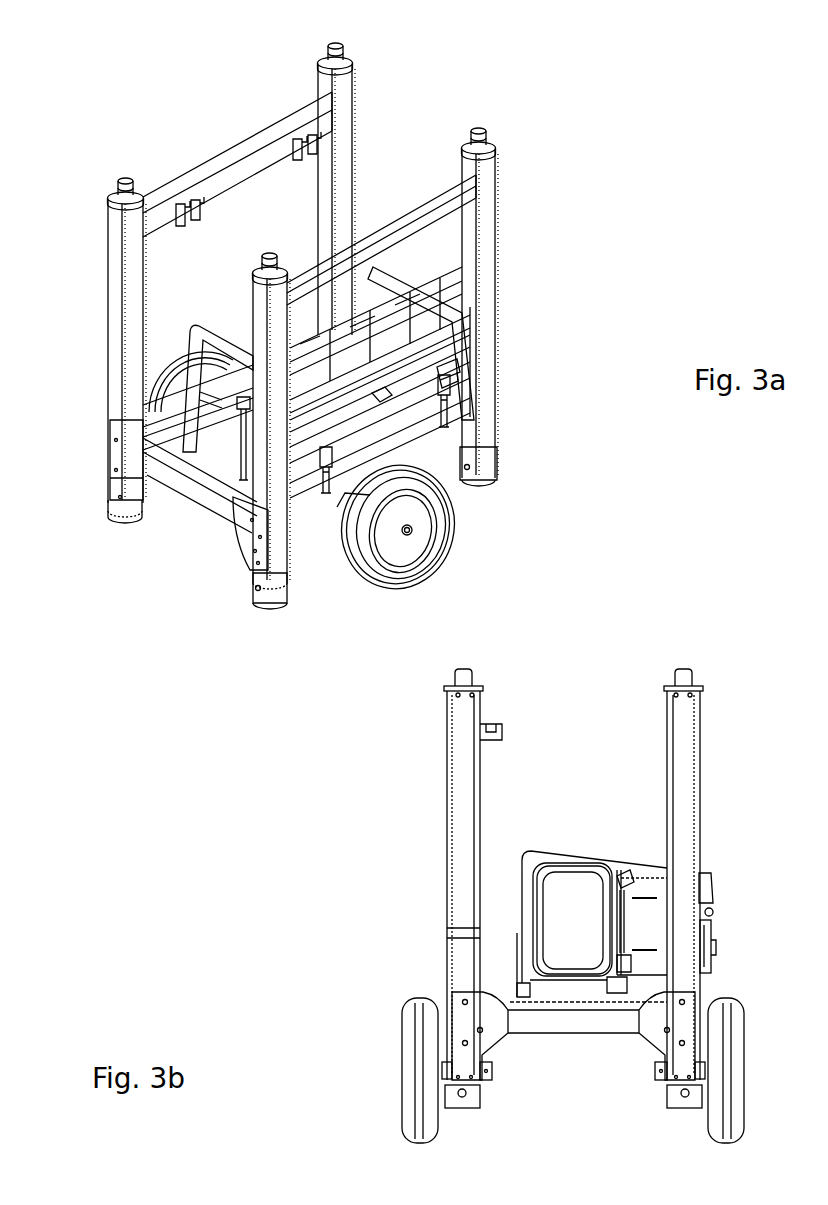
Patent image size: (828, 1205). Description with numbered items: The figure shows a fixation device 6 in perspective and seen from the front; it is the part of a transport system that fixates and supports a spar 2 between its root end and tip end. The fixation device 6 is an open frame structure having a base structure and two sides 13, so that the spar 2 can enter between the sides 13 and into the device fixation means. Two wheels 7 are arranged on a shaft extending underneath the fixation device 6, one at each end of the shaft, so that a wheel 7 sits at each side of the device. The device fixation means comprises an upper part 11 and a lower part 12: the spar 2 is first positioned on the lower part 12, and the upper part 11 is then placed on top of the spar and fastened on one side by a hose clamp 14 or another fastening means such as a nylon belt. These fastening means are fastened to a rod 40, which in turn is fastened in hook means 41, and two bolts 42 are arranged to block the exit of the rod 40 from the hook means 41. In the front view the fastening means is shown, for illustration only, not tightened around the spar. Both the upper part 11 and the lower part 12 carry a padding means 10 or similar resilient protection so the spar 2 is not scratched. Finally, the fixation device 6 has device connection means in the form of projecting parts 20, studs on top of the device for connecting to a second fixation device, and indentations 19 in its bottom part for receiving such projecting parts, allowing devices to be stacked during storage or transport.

In FIG. 3B, the spar 2 is at (572, 910).
In FIG. 3A, the fixation device 6 is at (190, 114).
In FIG. 3A, the wheels 7 is at (433, 483).
In FIG. 3B, the wheels 7 is at (405, 1027).
In FIG. 3A, the padding means 10 is at (233, 440).
In FIG. 3B, the padding means 10 is at (552, 998).
In FIG. 3A, the upper part 11 is at (473, 325).
In FIG. 3B, the upper part 11 is at (640, 918).
In FIG. 3A, the lower part 12 is at (215, 437).
In FIG. 3B, the lower part 12 is at (552, 997).
In FIG. 3A, the sides 13 is at (342, 120).
In FIG. 3B, the sides 13 is at (460, 833).
In FIG. 3A, the hose clamp 14 is at (433, 305).
In FIG. 3B, the hose clamp 14 is at (480, 933).
In FIG. 3A, the indentations 19 is at (483, 481).
In FIG. 3A, the projecting parts 20 is at (122, 183).
In FIG. 3B, the projecting parts 20 is at (573, 677).
In FIG. 3A, the rod 40 is at (378, 395).
In FIG. 3B, the rod 40 is at (707, 905).
In FIG. 3A, the hook means 41 is at (473, 372).
In FIG. 3A, the bolts 42 is at (443, 422).
In FIG. 3B, the bolts 42 is at (708, 950).